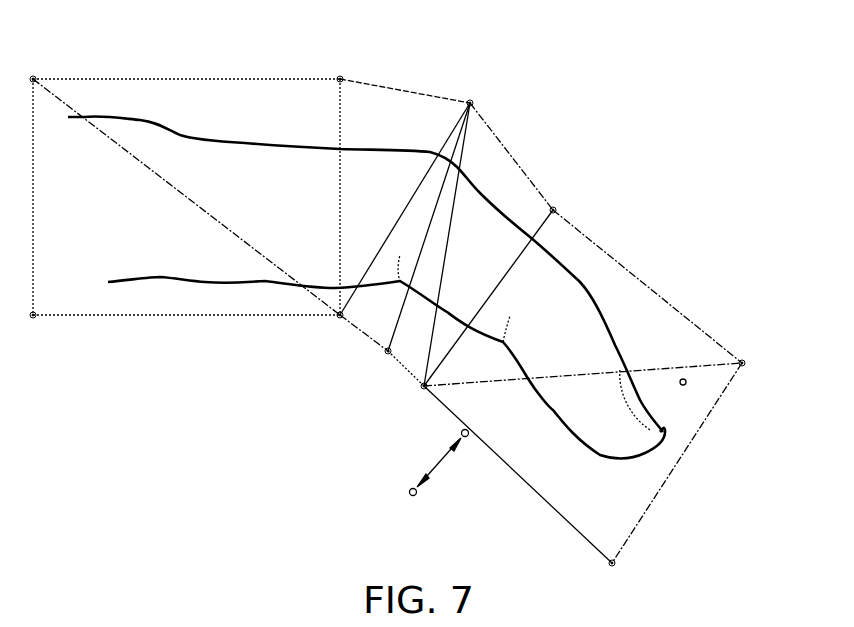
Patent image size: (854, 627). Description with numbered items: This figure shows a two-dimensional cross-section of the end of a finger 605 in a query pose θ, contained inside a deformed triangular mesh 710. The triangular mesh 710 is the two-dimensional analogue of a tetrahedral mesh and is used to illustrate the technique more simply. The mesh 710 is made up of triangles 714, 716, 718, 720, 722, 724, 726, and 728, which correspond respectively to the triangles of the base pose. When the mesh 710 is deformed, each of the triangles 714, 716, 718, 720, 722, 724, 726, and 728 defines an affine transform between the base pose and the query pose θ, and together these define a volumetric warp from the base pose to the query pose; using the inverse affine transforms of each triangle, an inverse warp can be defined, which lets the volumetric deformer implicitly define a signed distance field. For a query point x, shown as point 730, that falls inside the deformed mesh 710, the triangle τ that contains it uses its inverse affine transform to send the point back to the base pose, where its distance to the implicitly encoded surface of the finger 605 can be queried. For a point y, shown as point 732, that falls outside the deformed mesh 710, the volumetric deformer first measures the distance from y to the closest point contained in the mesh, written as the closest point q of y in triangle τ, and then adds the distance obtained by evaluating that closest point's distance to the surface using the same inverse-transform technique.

The finger 605 is at (258, 140).
The deformed triangular mesh 710 is at (688, 448).
The triangle 714 is at (187, 307).
The triangle 716 is at (185, 90).
The triangle 718 is at (373, 318).
The triangle 720 is at (407, 102).
The triangle 722 is at (407, 353).
The triangle 724 is at (515, 172).
The triangle 726 is at (635, 503).
The triangle 728 is at (642, 293).
The query point 730 is at (690, 383).
The point outside the mesh 732 is at (418, 500).